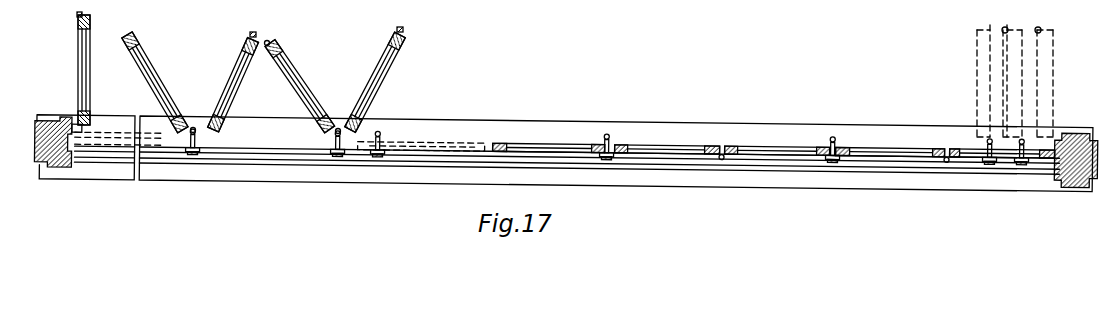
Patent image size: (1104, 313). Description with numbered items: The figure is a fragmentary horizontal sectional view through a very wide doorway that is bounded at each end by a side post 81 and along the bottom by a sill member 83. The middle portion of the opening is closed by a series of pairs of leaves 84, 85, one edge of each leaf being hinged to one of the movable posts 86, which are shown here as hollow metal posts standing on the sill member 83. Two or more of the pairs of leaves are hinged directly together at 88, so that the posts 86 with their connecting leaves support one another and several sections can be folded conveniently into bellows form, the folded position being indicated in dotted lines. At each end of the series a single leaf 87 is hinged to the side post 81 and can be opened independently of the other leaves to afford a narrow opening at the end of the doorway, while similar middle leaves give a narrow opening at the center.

The side post 81 is at (60, 162).
The sill member 83 is at (600, 120).
The leaf 84 is at (170, 82).
The leaf 85 is at (232, 83).
The movable post 86 is at (197, 155).
The single leaf 87 is at (85, 60).
The hinge connection 88 is at (267, 41).